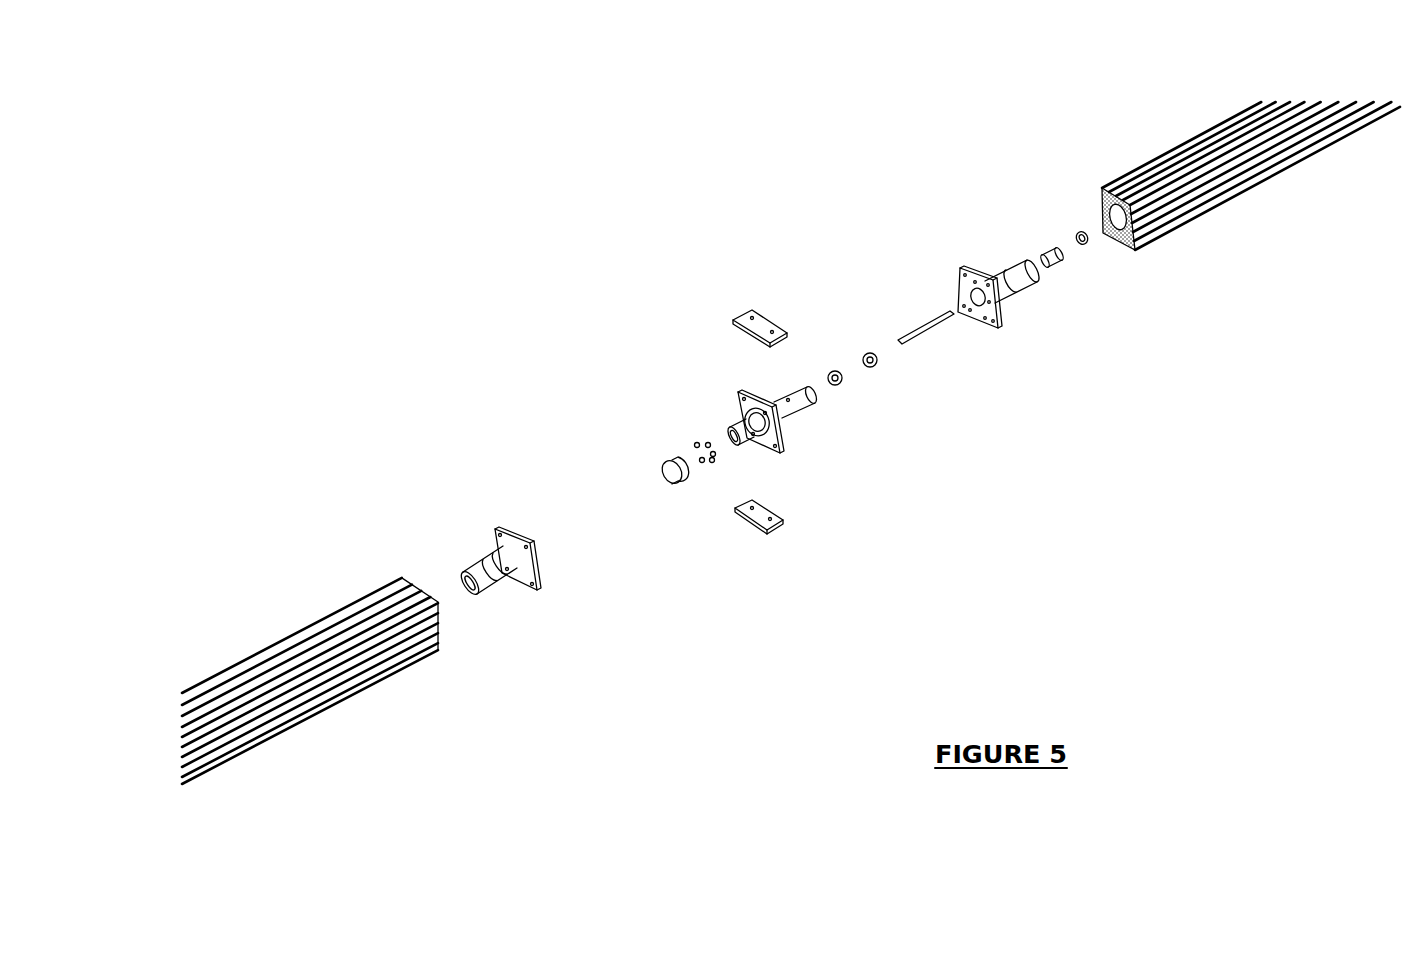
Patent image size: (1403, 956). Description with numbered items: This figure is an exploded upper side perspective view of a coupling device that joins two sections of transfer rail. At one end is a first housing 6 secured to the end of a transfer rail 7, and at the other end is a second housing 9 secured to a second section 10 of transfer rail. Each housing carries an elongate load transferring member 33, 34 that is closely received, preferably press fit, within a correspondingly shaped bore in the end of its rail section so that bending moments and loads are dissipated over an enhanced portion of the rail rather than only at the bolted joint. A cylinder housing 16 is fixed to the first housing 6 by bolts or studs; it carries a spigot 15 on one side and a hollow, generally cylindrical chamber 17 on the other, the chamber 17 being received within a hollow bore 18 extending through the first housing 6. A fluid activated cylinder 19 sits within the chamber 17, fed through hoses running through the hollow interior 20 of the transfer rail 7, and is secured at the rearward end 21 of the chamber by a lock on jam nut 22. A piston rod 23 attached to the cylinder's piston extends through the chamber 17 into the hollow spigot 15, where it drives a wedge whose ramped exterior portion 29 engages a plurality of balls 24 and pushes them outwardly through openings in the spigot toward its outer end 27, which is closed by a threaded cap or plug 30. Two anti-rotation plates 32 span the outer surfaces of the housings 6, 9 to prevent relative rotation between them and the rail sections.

The first housing 6 is at (966, 267).
The transfer rail 7 is at (1236, 176).
The second housing 9 is at (500, 527).
The second section of transfer rail 10 is at (340, 615).
The spigot 15 is at (837, 428).
The cylinder housing 16 is at (748, 393).
The chamber 17 is at (813, 407).
The hollow bore 18 is at (1110, 187).
The fluid activated cylinder 19 is at (1062, 256).
The hollow interior 20 is at (834, 371).
The rearward end 21 is at (815, 393).
The jam nut 22 is at (1090, 243).
The piston rod 23 is at (935, 316).
The balls 24 is at (697, 442).
The outer end 27 is at (731, 447).
The ramped exterior portion 29 is at (878, 360).
The cap or plug 30 is at (665, 462).
The plates 32 is at (752, 311).
The load transferring member 33 is at (1028, 288).
The load transferring member 34 is at (508, 593).